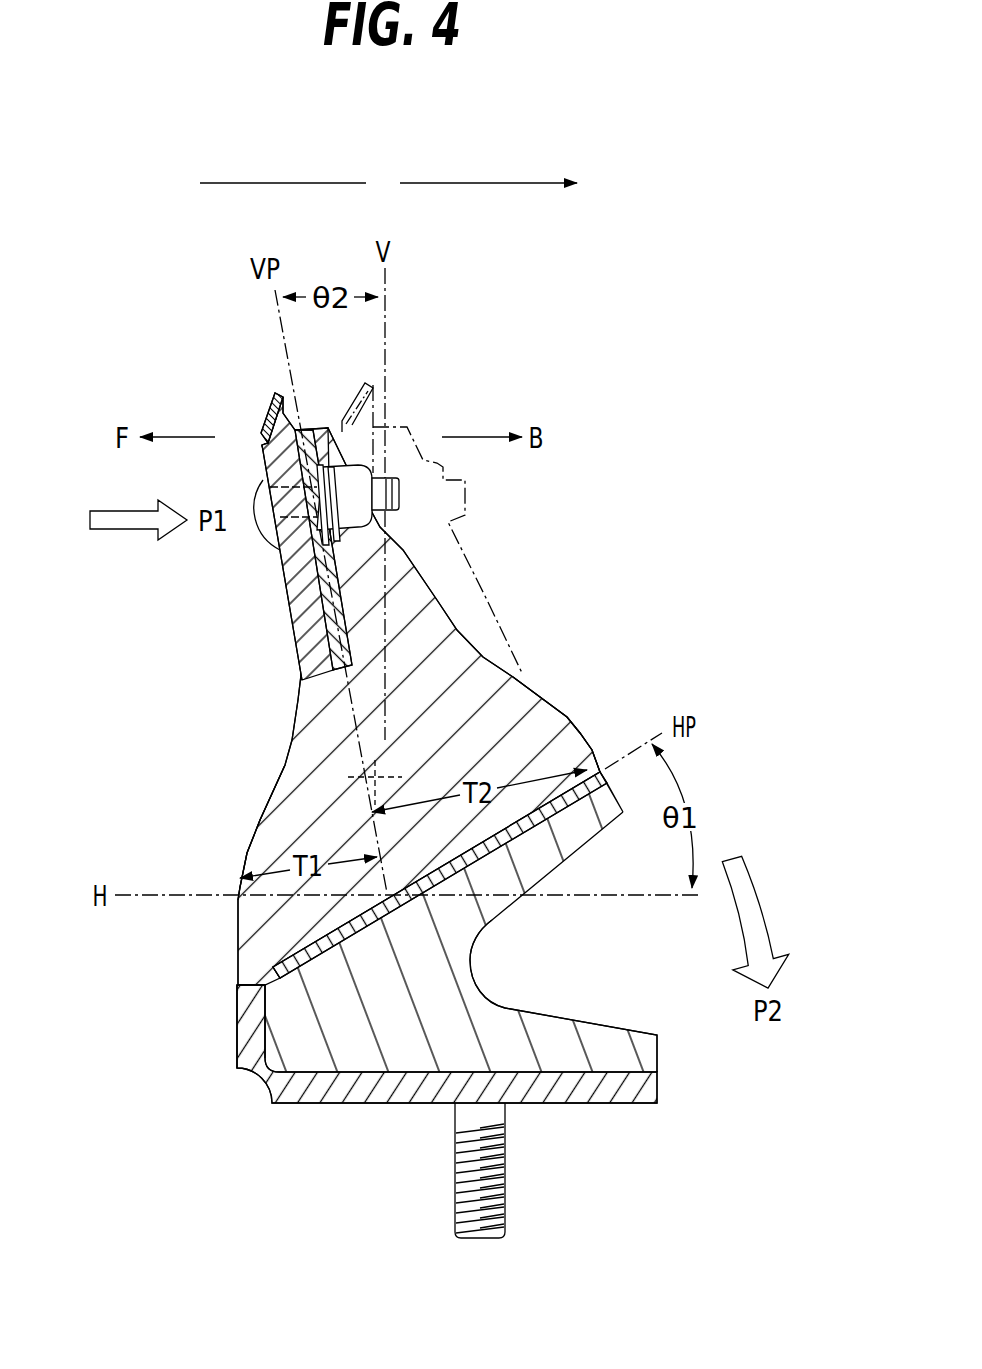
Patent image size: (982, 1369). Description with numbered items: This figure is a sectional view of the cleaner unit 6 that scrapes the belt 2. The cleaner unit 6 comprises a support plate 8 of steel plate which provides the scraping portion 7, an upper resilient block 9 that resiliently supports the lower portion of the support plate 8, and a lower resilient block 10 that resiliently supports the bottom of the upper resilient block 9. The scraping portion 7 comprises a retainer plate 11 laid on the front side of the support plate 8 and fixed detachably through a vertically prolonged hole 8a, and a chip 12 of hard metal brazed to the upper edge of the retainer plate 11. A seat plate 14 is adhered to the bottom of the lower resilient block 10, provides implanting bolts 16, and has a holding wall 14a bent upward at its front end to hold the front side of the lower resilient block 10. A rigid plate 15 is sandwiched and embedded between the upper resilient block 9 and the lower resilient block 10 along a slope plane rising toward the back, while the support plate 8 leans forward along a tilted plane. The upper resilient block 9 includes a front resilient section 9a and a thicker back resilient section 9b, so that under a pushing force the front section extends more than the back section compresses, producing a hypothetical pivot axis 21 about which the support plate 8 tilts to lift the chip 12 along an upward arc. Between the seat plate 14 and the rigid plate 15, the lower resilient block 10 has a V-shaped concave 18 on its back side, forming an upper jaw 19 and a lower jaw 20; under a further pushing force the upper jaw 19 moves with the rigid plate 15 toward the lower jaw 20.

The belt 2 is at (403, 184).
The cleaner unit 6 is at (498, 568).
The scraping portion 7 is at (258, 417).
The support plate 8 is at (328, 645).
The hole 8a is at (312, 490).
The upper resilient block 9 is at (292, 723).
The resilient section in front side 9a is at (288, 833).
The resilient section in back side 9b is at (560, 748).
The lower resilient block 10 is at (335, 1043).
The retainer plate 11 is at (330, 545).
The chip 12 is at (270, 410).
The seat plate 14 is at (557, 1104).
The holding wall 14a is at (238, 1010).
The rigid plate 15 is at (340, 923).
The implanting bolts 16 is at (455, 1198).
The V-shaped concave 18 is at (577, 966).
The upper jaw 19 is at (588, 847).
The lower jaw 20 is at (600, 1020).
The hypothetical pivot axis 21 is at (365, 773).